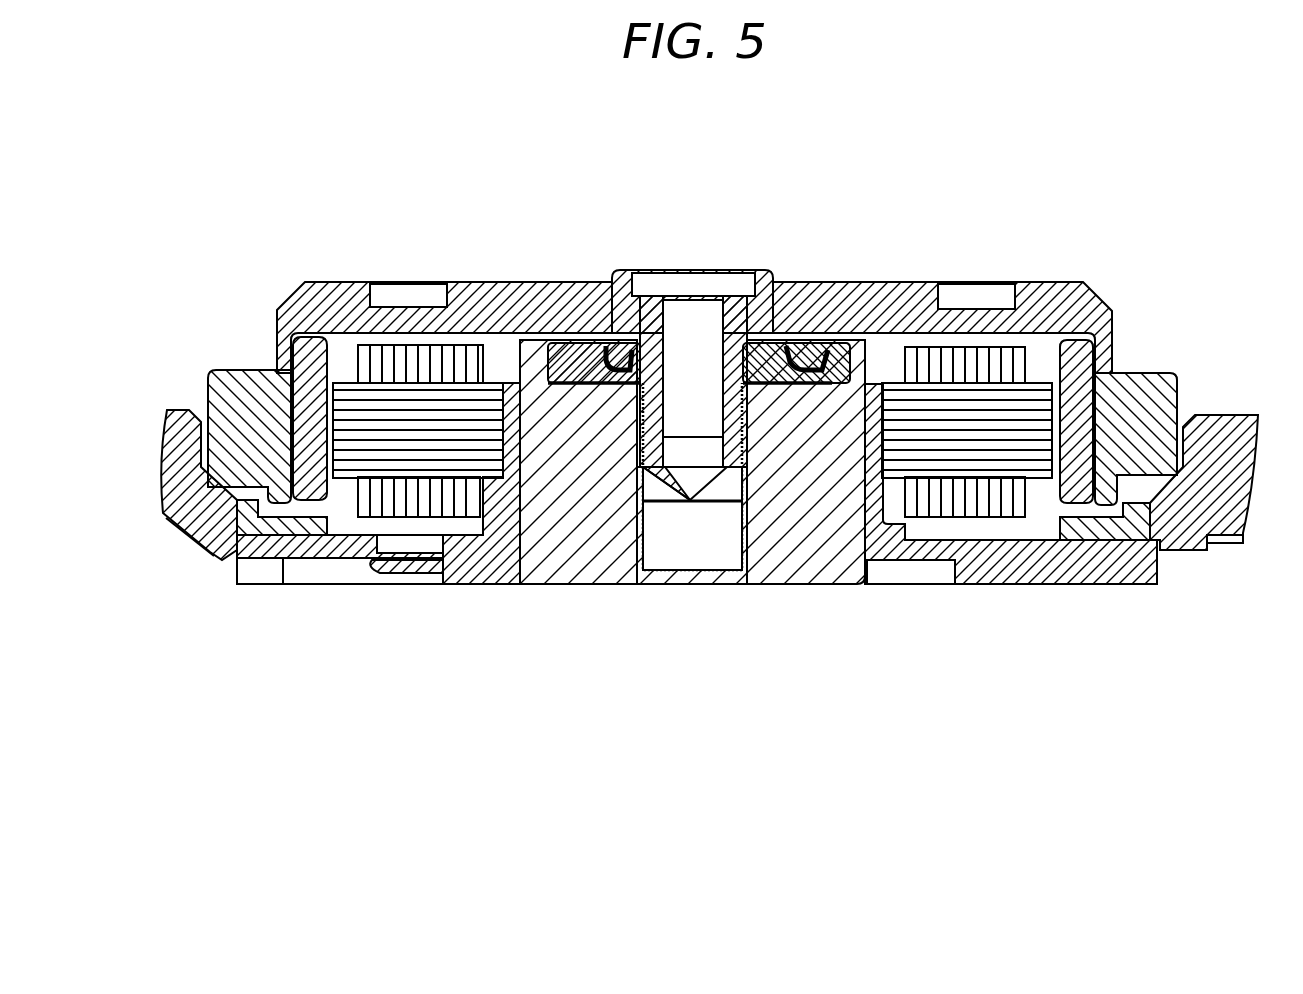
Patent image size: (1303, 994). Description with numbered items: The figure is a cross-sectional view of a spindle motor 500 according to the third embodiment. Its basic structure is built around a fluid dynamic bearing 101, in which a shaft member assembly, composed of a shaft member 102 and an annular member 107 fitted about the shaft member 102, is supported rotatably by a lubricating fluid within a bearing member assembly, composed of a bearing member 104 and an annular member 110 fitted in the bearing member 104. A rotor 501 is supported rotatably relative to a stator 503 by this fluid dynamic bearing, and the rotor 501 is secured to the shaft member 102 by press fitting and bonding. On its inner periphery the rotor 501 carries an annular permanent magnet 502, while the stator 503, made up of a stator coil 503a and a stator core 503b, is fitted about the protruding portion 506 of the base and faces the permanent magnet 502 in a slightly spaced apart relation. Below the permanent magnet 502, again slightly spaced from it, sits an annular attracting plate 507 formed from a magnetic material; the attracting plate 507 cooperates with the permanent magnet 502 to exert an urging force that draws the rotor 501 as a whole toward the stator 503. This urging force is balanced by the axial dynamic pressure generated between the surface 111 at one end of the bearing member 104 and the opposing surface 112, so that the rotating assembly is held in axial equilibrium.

The spindle motor 500 is at (562, 267).
The rotor 501 is at (920, 290).
The annular permanent magnet 502 is at (276, 328).
The stator 503 is at (338, 337).
The stator coil 503a is at (380, 357).
The stator core 503b is at (423, 410).
The protruding portion 506 is at (476, 560).
The annular attracting plate 507 is at (268, 525).
The fluid dynamic bearing 101 is at (682, 606).
The shaft member 102 is at (692, 497).
The bearing member 104 is at (793, 568).
The annular member on the shaft member 107 is at (770, 370).
The annular member on the bearing member 110 is at (803, 370).
The surface of the bearing member 111 is at (605, 398).
The surface 112 is at (621, 360).